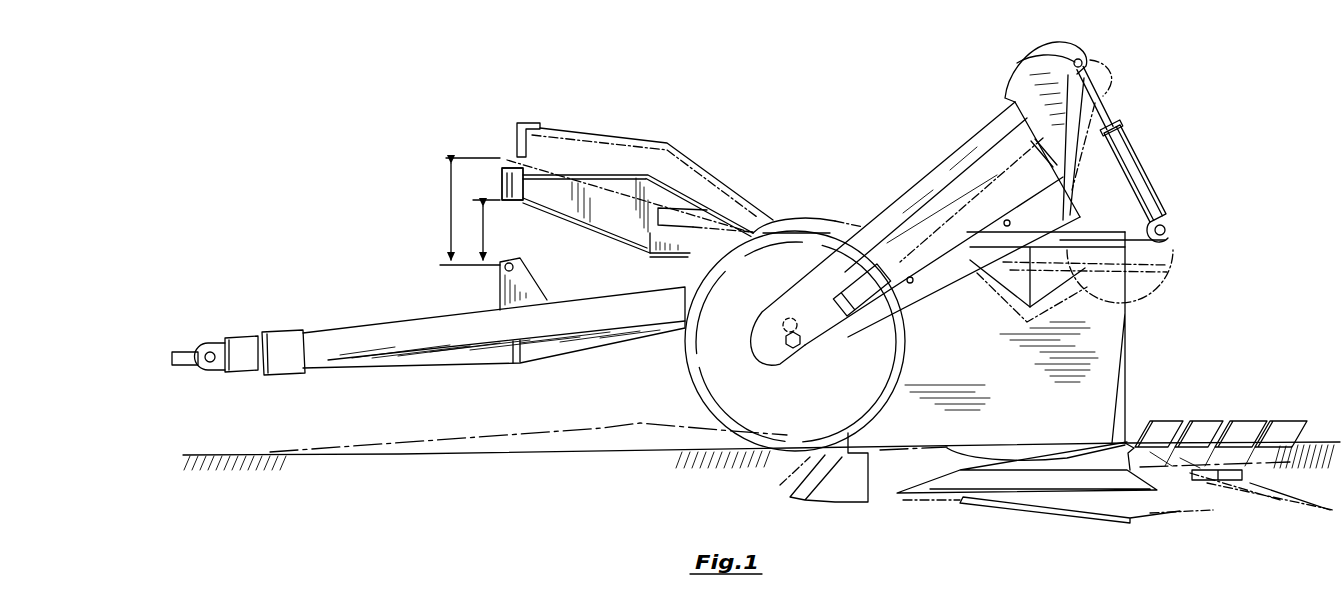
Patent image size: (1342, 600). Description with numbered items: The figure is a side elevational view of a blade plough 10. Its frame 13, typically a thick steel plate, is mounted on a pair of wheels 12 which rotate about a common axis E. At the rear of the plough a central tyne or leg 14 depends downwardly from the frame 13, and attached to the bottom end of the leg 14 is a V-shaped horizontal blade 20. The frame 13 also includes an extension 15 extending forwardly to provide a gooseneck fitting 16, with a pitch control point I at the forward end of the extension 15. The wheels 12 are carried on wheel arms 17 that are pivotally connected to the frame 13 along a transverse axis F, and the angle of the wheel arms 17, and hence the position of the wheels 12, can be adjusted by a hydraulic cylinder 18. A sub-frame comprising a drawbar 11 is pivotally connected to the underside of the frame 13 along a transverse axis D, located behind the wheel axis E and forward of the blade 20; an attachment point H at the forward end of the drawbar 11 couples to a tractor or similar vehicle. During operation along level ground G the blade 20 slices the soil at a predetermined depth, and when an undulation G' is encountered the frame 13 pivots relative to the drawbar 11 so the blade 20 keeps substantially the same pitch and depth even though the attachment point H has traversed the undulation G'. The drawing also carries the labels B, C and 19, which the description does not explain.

The blade plough 10 is at (799, 189).
The drawbar 11 is at (366, 325).
The wheels 12 is at (884, 400).
The frame 13 is at (850, 232).
The central tyne or leg 14 is at (1034, 400).
The extension 15 is at (621, 190).
The gooseneck fitting 16 is at (519, 190).
The wheel arms 17 is at (977, 147).
The hydraulic cylinder 18 is at (1127, 140).
The bracket 19 is at (498, 299).
The V-shaped horizontal blade 20 is at (1033, 500).
The attachment point H is at (213, 365).
The pitch control point I is at (502, 160).
The dimension B is at (480, 230).
The dimension C is at (464, 211).
The transverse axis D is at (913, 281).
The wheel axis E is at (803, 348).
The transverse axis F is at (1007, 226).
The level ground G is at (761, 464).
The undulation G' is at (780, 431).